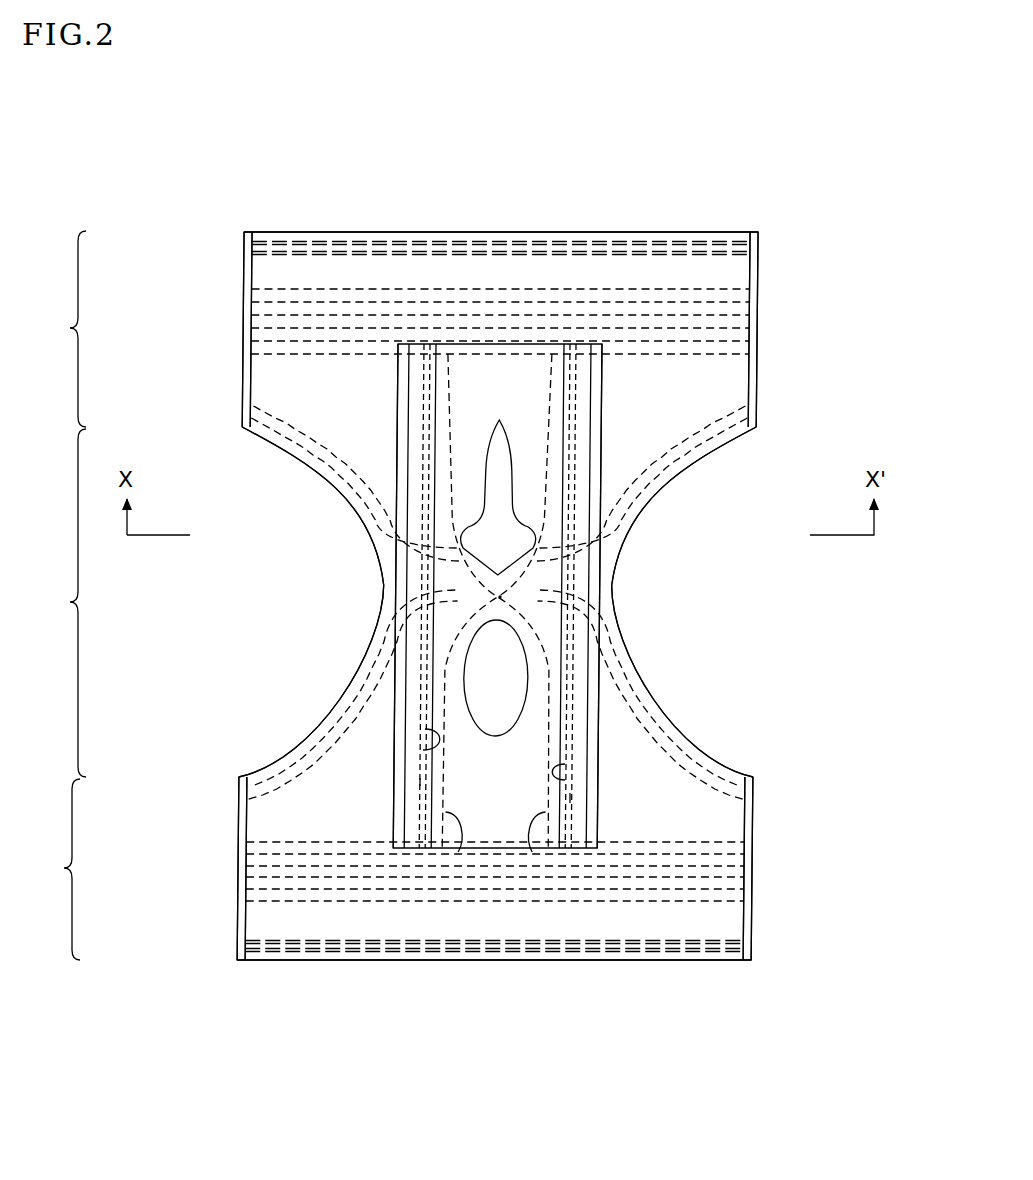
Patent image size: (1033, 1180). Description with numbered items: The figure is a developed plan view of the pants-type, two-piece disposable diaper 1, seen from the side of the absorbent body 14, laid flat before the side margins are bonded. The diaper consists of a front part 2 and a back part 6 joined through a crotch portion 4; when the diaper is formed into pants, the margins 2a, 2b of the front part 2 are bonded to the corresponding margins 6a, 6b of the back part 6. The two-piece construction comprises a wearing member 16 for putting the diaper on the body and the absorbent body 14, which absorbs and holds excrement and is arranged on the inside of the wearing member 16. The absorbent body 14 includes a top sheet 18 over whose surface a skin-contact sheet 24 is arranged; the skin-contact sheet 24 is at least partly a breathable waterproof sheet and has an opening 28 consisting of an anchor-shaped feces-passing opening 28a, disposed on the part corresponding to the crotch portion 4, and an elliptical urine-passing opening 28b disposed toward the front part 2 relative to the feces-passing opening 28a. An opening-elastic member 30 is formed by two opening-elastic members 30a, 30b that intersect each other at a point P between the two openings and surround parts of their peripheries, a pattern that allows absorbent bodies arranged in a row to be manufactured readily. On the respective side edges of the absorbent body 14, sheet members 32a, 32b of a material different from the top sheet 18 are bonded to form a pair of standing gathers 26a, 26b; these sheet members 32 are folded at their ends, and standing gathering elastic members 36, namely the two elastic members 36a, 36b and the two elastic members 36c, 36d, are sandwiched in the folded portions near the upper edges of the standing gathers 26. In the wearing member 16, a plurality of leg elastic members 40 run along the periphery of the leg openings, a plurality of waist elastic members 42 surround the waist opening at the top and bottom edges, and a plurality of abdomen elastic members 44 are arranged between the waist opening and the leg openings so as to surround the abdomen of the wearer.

The disposable diaper 1 is at (814, 163).
The front part 2 is at (434, 868).
The margin 2a is at (237, 871).
The margin 2b is at (754, 873).
The crotch portion 4 is at (403, 602).
The back part 6 is at (453, 329).
The margin 6a is at (240, 307).
The margin 6b is at (763, 320).
The absorbent body 14 is at (609, 727).
The wearing member 16 is at (733, 383).
The top sheet 18 is at (513, 543).
The skin-contact sheet 24 is at (497, 372).
The standing gathers 26 is at (513, 596).
The standing gather 26a is at (411, 467).
The standing gather 26b is at (590, 458).
The opening 28 is at (393, 578).
The feces-passing opening 28a is at (489, 530).
The urine-passing opening 28b is at (486, 682).
The opening-elastic member 30 is at (502, 921).
The opening-elastic member 30a is at (458, 853).
The opening-elastic member 30b is at (537, 851).
The sheet members 32 is at (501, 596).
The sheet member 32a is at (400, 715).
The sheet member 32b is at (600, 680).
The standing gathering elastic members 36 is at (505, 771).
The standing gathering elastic member 36a is at (425, 729).
The standing gathering elastic member 36b is at (420, 783).
The standing gathering elastic member 36c is at (565, 764).
The standing gathering elastic member 36d is at (570, 798).
The leg elastic members 40 is at (292, 428).
The waist elastic members 42 is at (613, 242).
The abdomen elastic members 44 is at (720, 290).
The point P is at (507, 597).